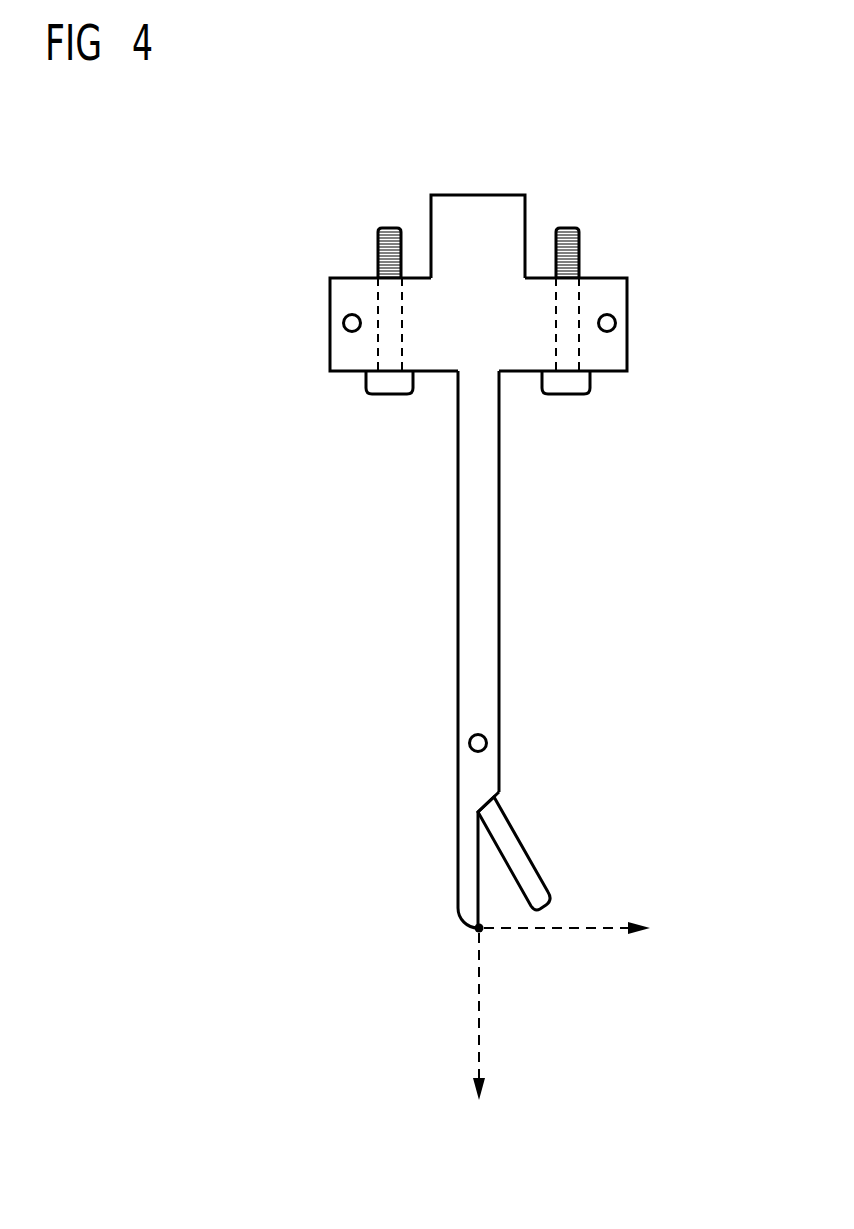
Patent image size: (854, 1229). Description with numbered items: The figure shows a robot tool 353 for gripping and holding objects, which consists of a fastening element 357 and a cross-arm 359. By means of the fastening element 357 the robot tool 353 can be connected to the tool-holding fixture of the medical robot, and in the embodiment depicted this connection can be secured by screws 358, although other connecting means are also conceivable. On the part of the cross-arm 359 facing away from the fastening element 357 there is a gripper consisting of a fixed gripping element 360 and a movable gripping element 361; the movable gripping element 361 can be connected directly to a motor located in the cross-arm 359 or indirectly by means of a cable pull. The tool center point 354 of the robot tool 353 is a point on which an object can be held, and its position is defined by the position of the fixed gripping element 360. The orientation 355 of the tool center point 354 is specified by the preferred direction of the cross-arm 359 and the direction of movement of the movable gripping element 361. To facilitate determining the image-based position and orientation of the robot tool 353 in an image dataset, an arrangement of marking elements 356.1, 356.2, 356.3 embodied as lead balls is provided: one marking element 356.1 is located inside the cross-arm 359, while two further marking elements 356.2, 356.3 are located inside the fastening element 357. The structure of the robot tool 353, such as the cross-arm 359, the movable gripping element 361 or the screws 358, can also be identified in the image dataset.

The robot tool 353 is at (175, 186).
The tool center point 354 is at (474, 932).
The orientation 355 is at (636, 935).
The marking element 356.1 is at (487, 743).
The marking element 356.2 is at (343, 323).
The marking element 356.3 is at (616, 323).
The fastening element 357 is at (477, 203).
The screws 358 is at (387, 387).
The cross-arm 359 is at (468, 622).
The fixed gripping element 360 is at (463, 880).
The movable gripping element 361 is at (522, 865).